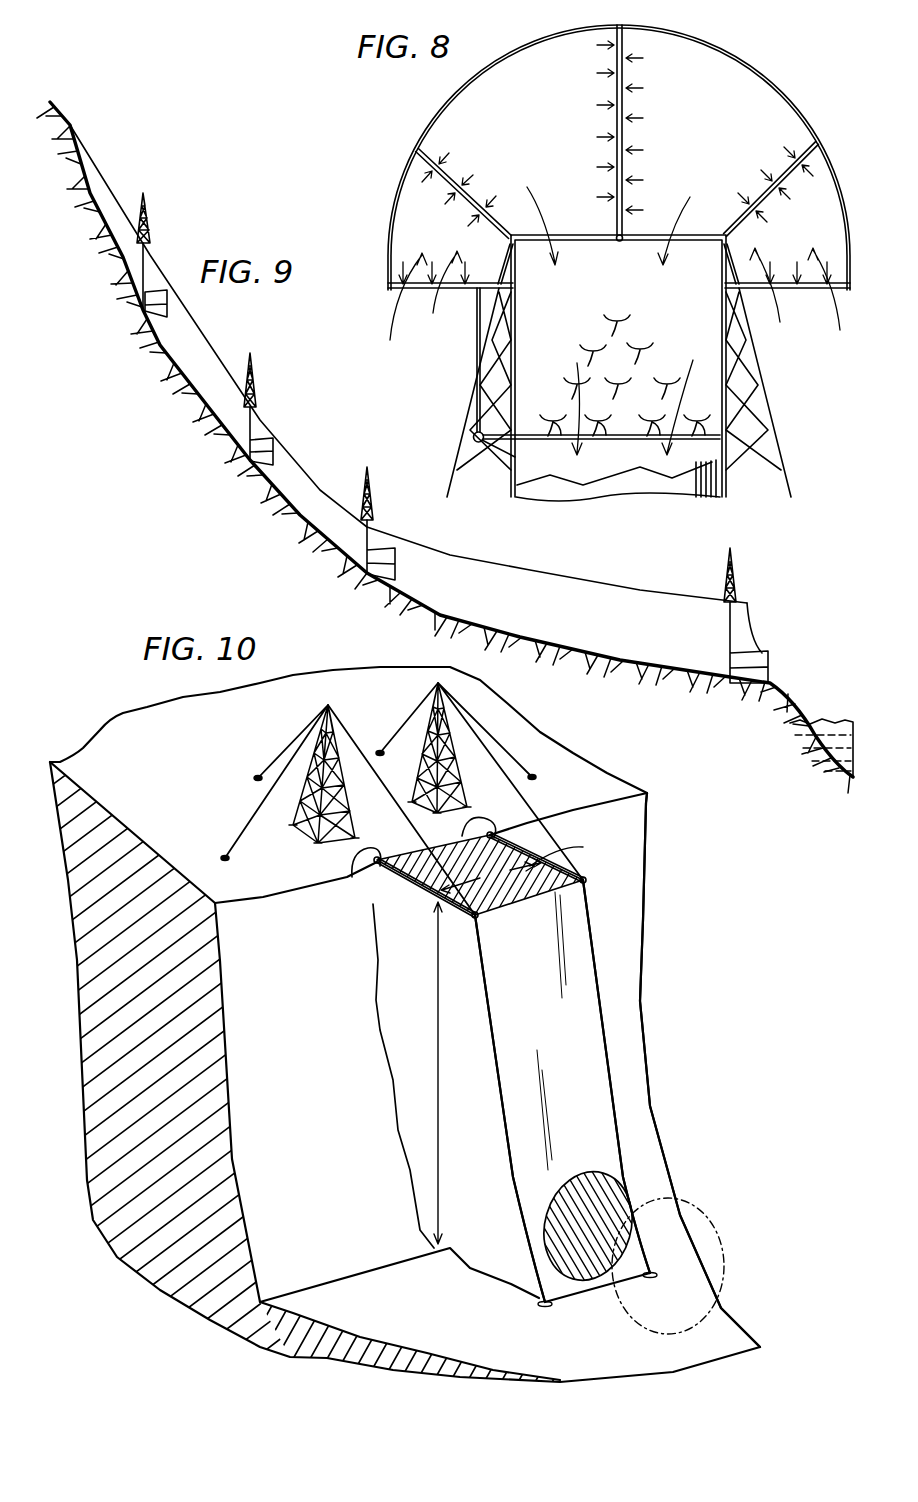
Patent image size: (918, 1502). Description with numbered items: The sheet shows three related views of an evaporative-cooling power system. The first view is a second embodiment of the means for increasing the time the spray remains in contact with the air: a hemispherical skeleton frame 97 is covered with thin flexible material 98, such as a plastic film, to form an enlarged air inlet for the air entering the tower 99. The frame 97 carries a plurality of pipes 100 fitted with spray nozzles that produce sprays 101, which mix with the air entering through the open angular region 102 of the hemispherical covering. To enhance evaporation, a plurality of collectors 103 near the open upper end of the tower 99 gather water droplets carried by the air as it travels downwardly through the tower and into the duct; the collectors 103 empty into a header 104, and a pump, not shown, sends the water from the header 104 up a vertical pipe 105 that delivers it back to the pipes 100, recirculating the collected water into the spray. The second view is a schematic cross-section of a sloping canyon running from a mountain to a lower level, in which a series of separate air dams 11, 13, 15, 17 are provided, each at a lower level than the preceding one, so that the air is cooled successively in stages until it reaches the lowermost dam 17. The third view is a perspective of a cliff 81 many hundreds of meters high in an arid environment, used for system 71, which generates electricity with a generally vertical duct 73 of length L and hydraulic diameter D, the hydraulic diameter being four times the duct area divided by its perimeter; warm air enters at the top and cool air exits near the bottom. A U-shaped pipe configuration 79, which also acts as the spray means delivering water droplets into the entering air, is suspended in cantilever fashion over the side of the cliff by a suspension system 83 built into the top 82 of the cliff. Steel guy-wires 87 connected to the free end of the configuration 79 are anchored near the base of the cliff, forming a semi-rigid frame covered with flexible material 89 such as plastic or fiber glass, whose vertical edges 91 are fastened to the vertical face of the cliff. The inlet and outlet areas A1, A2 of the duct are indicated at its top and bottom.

In FIG. 8, the hemispherical skeleton frame 97 is at (636, 75).
In FIG. 8, the thin flexible material 98 is at (766, 76).
In FIG. 8, the tower 99 is at (643, 490).
In FIG. 8, the pipes 100 is at (622, 133).
In FIG. 8, the sprays 101 is at (471, 160).
In FIG. 8, the open angular region 102 is at (417, 275).
In FIG. 8, the collectors 103 is at (677, 377).
In FIG. 8, the header 104 is at (472, 438).
In FIG. 8, the vertical pipe 105 is at (477, 336).
In FIG. 9, the air dam 11 is at (160, 267).
In FIG. 9, the air dam 13 is at (270, 425).
In FIG. 9, the air dam 15 is at (383, 534).
In FIG. 9, the air dam 17 is at (744, 635).
In FIG. 10, the system 71 is at (620, 963).
In FIG. 10, the vertical duct 73 is at (618, 1081).
In FIG. 10, the U-shaped pipe configuration 79 is at (374, 878).
In FIG. 10, the cliff 81 is at (632, 815).
In FIG. 10, the top of the cliff 82 is at (588, 782).
In FIG. 10, the suspension system 83 is at (505, 762).
In FIG. 10, the steel guy-wires 87 is at (600, 1015).
In FIG. 10, the flexible material 89 is at (584, 1133).
In FIG. 10, the vertical edges 91 is at (377, 1031).
In FIG. 10, the inlet area A1 is at (566, 852).
In FIG. 10, the outlet area A2 is at (606, 1209).
In FIG. 10, the hydraulic diameter D is at (491, 875).
In FIG. 10, the length L is at (437, 1073).